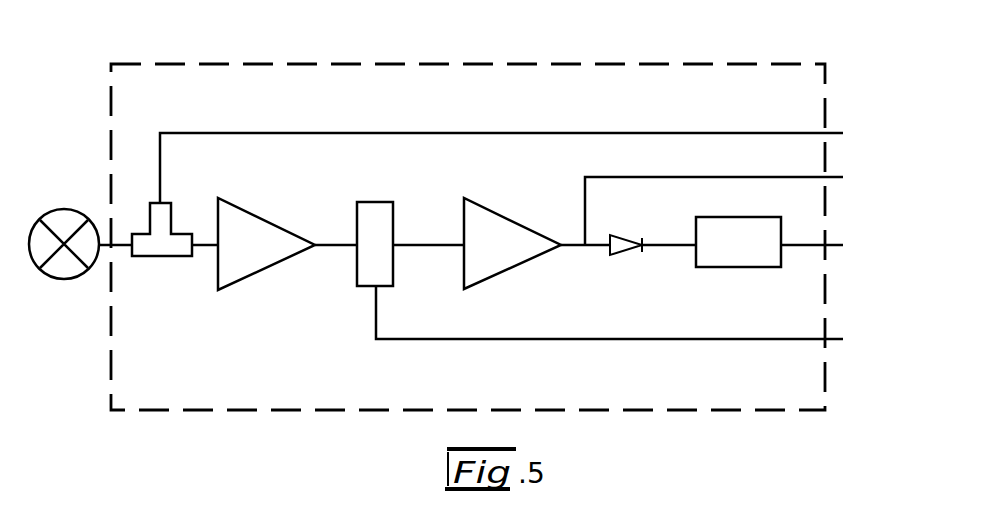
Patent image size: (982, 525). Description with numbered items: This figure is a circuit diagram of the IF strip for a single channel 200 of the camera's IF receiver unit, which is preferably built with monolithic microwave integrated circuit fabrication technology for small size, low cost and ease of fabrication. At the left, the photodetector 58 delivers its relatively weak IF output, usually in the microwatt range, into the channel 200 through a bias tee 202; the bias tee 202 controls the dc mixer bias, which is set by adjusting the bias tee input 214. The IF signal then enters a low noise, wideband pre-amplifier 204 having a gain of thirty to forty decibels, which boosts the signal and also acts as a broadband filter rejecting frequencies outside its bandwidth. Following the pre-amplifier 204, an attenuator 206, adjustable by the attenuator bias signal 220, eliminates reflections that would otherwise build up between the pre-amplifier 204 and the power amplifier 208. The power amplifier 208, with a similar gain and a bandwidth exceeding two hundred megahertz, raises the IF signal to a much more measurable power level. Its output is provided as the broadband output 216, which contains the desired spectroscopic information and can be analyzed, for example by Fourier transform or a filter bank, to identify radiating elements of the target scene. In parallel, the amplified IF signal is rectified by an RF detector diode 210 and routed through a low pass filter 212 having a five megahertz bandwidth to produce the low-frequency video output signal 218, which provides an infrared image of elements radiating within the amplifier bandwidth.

The photodetector 58 is at (92, 216).
The channel 200 is at (292, 62).
The bias tee 202 is at (157, 257).
The pre-amplifier 204 is at (255, 275).
The attenuator 206 is at (354, 275).
The power amplifier 208 is at (508, 272).
The RF detector diode 210 is at (622, 255).
The low pass filter 212 is at (723, 268).
The bias tee input 214 is at (523, 163).
The broadband output 216 is at (735, 205).
The video output signal 218 is at (833, 247).
The attenuator bias signal 220 is at (631, 319).